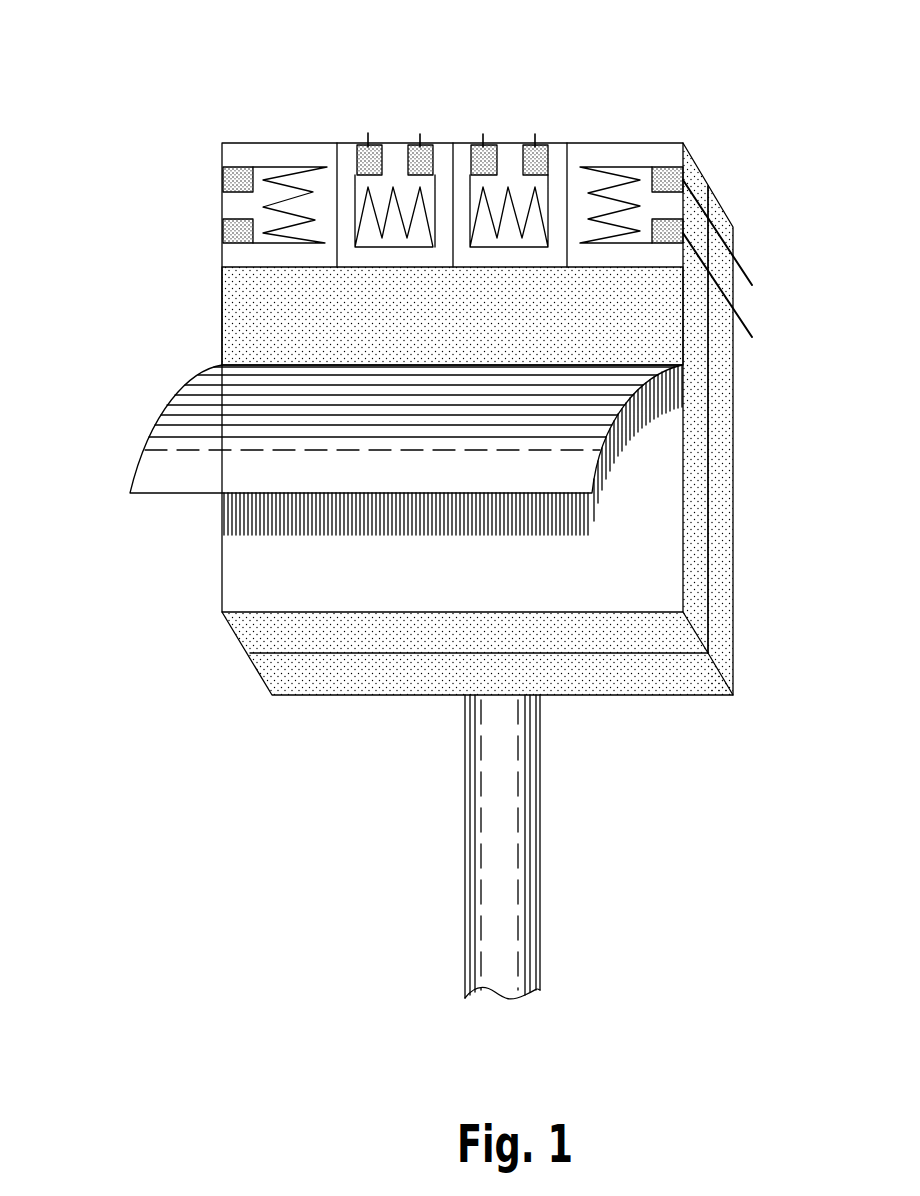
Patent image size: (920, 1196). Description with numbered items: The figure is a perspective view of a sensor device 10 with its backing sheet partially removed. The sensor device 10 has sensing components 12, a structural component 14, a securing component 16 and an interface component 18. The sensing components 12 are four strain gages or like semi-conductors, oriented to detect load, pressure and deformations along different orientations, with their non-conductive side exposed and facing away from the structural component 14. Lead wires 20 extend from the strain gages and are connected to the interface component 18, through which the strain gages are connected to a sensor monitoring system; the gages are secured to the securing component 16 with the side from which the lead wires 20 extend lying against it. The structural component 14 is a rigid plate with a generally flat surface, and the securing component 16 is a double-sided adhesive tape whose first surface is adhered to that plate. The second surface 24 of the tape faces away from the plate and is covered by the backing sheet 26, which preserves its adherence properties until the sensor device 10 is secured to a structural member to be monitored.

The sensor device 10 is at (172, 377).
The sensing components 12 is at (394, 153).
The structural component 14 is at (724, 446).
The securing component 16 is at (698, 378).
The interface component 18 is at (465, 858).
The lead wires 20 is at (225, 232).
The second surface 24 is at (250, 317).
The backing sheet 26 is at (240, 441).